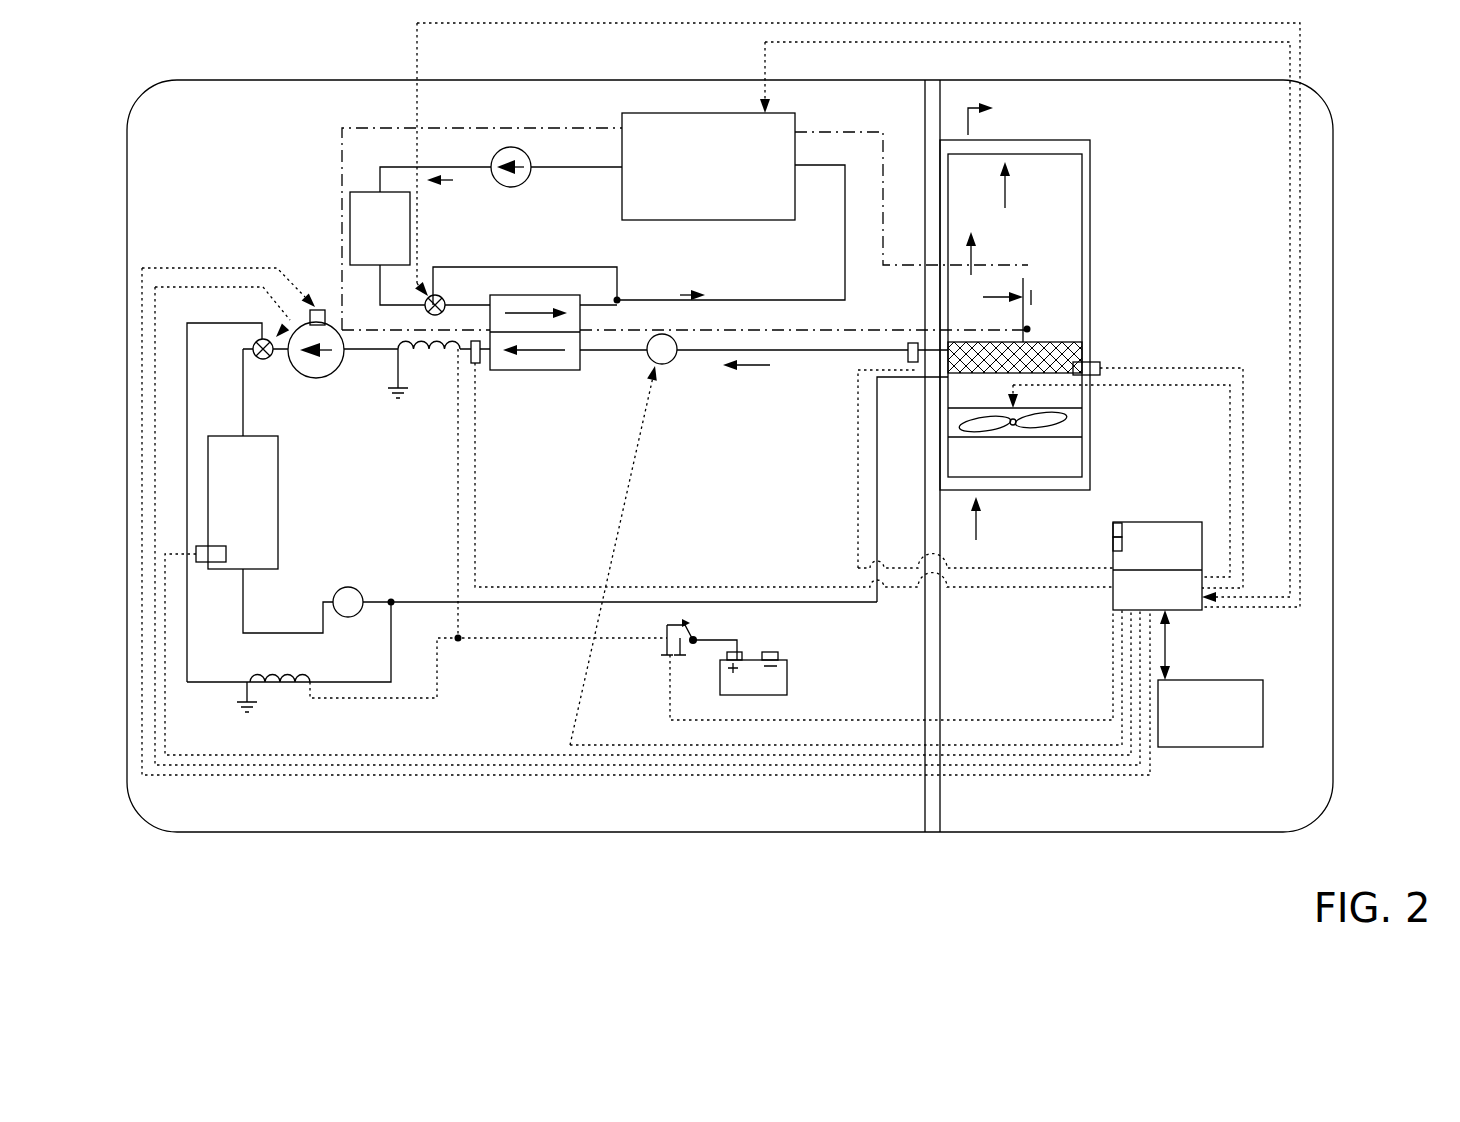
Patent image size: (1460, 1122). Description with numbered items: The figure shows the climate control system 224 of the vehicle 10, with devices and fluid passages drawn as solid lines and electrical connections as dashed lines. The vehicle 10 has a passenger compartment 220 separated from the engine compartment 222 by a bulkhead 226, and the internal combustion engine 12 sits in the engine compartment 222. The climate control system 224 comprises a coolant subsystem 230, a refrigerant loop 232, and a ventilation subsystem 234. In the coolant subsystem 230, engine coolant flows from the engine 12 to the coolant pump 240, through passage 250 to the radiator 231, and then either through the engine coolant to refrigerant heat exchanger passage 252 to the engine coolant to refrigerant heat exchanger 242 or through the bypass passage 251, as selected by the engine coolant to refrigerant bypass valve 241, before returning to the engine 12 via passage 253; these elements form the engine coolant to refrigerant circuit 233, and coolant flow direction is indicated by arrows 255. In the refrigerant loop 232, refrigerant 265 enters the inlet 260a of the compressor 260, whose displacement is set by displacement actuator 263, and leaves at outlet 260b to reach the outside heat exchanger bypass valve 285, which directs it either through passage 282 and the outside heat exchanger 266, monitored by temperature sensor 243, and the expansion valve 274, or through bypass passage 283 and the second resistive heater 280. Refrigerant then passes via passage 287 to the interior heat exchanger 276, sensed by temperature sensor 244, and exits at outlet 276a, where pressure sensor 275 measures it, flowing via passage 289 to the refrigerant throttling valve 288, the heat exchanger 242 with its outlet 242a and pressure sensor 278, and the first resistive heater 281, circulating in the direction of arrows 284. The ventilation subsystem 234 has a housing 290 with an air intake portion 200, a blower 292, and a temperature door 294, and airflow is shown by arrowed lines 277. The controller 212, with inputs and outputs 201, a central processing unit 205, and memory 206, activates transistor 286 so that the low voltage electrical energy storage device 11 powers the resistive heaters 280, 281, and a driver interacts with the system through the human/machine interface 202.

The vehicle 10 is at (146, 97).
The low voltage electrical energy storage device 11 is at (787, 662).
The internal combustion engine 12 is at (696, 181).
The air intake portion 200 is at (989, 471).
The inputs and outputs 201 is at (1185, 612).
The human/machine interface 202 is at (1190, 727).
The central processing unit 205 is at (1113, 544).
The non-transitory memory 206 is at (1113, 528).
The controller 212 is at (838, 486).
The passenger compartment 220 is at (1224, 301).
The engine compartment 222 is at (219, 166).
The climate control system 224 is at (186, 206).
The bulkhead 226 is at (942, 660).
The coolant subsystem 230 is at (342, 152).
The radiator 231 is at (380, 228).
The refrigerant loop 232 is at (309, 287).
The engine coolant to refrigerant circuit 233 is at (592, 256).
The ventilation subsystem 234 is at (1106, 159).
The coolant pump 240 is at (513, 188).
The engine coolant to refrigerant bypass valve 241 is at (422, 290).
The engine coolant to refrigerant heat exchanger 242 is at (517, 295).
The outlet of engine coolant to refrigerant heat exchanger 242a is at (492, 352).
The temperature sensor 243 is at (213, 555).
The temperature sensor 244 is at (1085, 367).
The passage 250 is at (458, 167).
The engine coolant to refrigerant heat exchanger bypass passage 251 is at (480, 268).
The engine coolant to refrigerant heat exchanger passage 252 is at (447, 309).
The passage 253 is at (796, 304).
The arrows 255 is at (456, 188).
The compressor 260 is at (290, 366).
The inlet 260a is at (343, 364).
The outlet 260b is at (282, 362).
The displacement actuator 263 is at (310, 312).
The refrigerant 265 is at (1073, 375).
The outside heat exchanger 266 is at (222, 516).
The expansion valve 274 is at (338, 592).
The pressure sensor 275 is at (905, 352).
The interior heat exchanger 276 is at (1072, 352).
The outlet of interior heat exchanger 276a is at (946, 349).
The arrowed lines 277 is at (975, 130).
The pressure sensor 278 is at (479, 362).
The second resistive heater 280 is at (292, 684).
The first resistive heater 281 is at (447, 355).
The passage 282 is at (243, 425).
The bypass passage 283 is at (190, 684).
The arrows 284 is at (419, 581).
The outside heat exchanger bypass valve 285 is at (268, 362).
The transistor 286 is at (700, 632).
The passage 287 is at (843, 605).
The refrigerant throttling valve 288 is at (672, 360).
The passage 289 is at (775, 353).
The housing 290 is at (1093, 487).
The blower 292 is at (1082, 420).
The temperature door 294 is at (1027, 326).